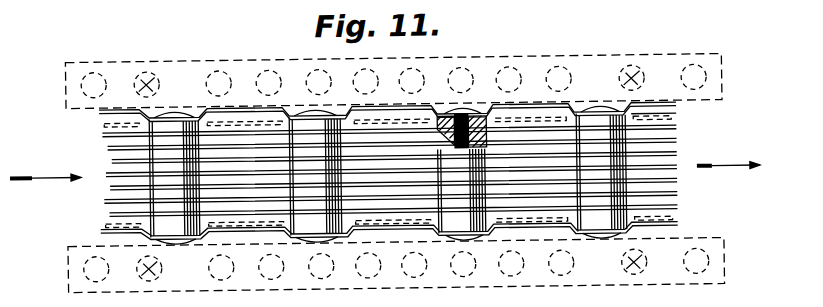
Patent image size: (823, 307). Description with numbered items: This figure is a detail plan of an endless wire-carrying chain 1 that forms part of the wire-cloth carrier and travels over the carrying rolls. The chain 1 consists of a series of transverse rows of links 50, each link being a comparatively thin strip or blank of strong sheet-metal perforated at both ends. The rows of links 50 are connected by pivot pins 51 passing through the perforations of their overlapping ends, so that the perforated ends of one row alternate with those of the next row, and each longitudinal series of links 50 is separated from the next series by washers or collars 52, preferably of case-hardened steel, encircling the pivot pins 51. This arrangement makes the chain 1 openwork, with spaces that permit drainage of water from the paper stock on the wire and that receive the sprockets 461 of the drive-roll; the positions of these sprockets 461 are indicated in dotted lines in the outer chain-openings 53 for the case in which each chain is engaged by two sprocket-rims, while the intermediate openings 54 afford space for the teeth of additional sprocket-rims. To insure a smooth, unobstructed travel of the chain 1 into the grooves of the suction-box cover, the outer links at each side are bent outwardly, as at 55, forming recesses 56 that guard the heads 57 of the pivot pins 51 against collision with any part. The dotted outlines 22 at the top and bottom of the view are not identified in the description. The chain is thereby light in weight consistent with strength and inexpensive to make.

The wire-carrying chain 1 is at (384, 147).
The tube sheet header plate 22 is at (725, 77).
The links 50 is at (112, 183).
The pivot pins 51 is at (172, 109).
The washers or collars 52 is at (153, 152).
The outer chain-openings 53 is at (545, 133).
The intermediate openings 54 is at (235, 148).
The outwardly bent portion of outer links 55 is at (247, 108).
The recesses 56 is at (295, 112).
The heads of the pivot-pins 57 is at (478, 109).
The sprockets 461 is at (388, 110).